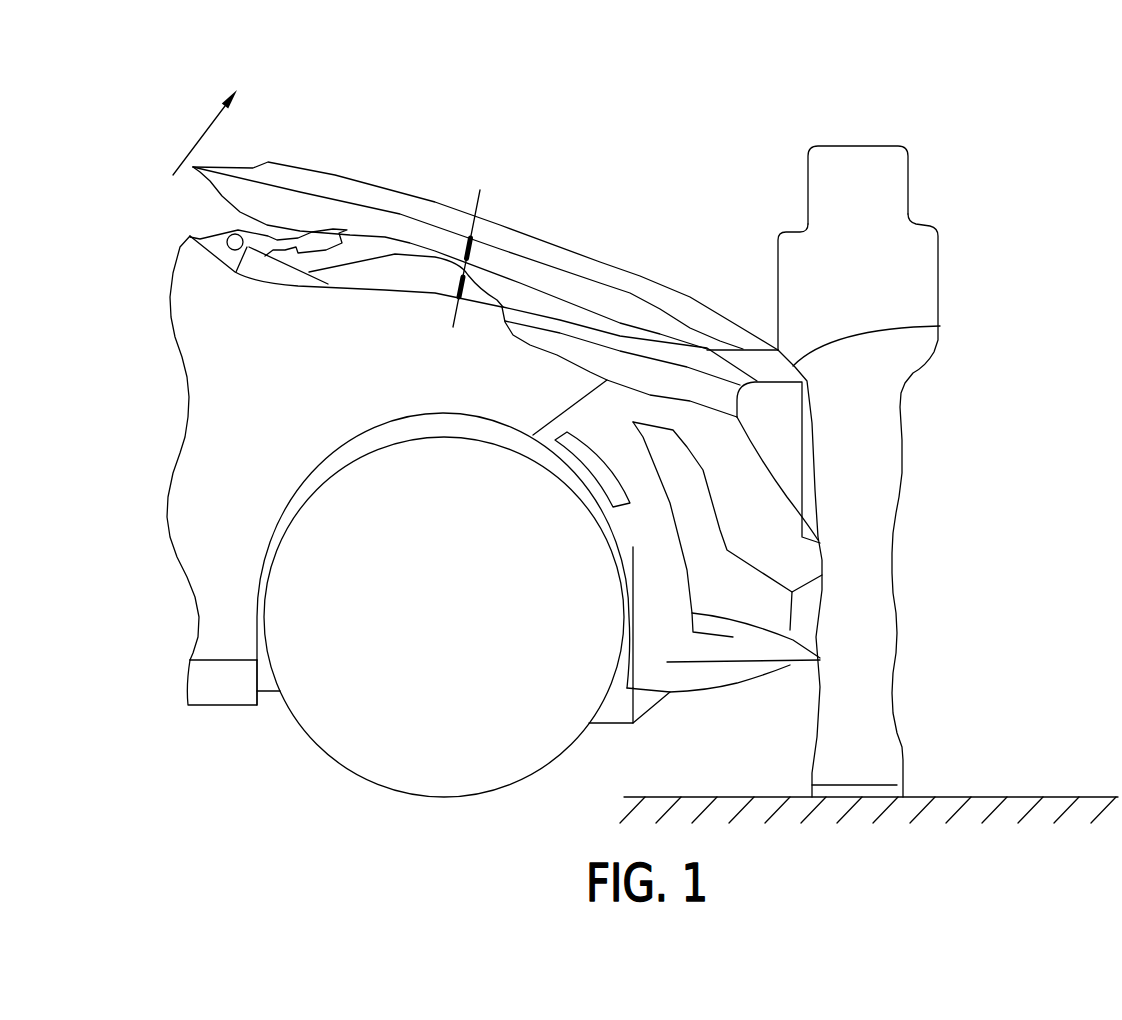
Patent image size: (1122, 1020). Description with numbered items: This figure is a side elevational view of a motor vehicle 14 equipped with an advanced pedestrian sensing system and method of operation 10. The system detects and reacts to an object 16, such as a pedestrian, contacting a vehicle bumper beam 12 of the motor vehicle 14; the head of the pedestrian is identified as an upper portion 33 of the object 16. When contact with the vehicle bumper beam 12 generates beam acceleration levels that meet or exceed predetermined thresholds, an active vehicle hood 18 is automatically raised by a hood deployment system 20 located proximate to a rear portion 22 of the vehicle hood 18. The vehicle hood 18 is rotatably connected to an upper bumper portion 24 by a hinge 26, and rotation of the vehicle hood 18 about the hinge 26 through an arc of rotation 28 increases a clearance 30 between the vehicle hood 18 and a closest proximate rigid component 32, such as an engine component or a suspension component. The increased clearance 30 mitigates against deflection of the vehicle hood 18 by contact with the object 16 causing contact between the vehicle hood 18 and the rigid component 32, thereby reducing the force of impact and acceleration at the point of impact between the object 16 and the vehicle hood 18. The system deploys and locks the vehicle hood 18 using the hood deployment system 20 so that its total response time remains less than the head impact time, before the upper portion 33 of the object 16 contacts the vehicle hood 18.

The advanced pedestrian sensing system and method of operation 10 is at (966, 80).
The vehicle bumper beam 12 is at (827, 552).
The motor vehicle 14 is at (193, 467).
The object 16 is at (923, 270).
The vehicle hood 18 is at (580, 262).
The hood deployment system 20 is at (302, 247).
The rear portion 22 is at (210, 180).
The upper bumper portion 24 is at (940, 326).
The hinge 26 is at (745, 349).
The arc of rotation 28 is at (197, 135).
The clearance 30 is at (480, 190).
The rigid component 32 is at (403, 258).
The upper portion 33 is at (828, 158).